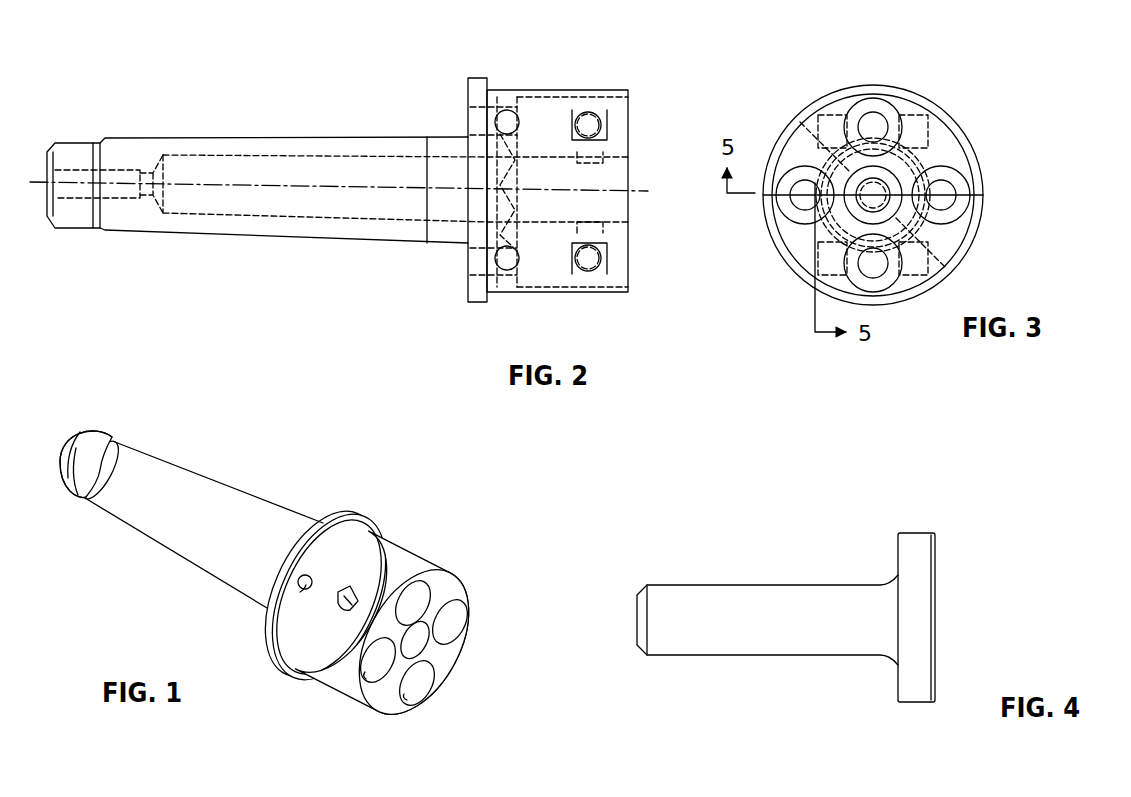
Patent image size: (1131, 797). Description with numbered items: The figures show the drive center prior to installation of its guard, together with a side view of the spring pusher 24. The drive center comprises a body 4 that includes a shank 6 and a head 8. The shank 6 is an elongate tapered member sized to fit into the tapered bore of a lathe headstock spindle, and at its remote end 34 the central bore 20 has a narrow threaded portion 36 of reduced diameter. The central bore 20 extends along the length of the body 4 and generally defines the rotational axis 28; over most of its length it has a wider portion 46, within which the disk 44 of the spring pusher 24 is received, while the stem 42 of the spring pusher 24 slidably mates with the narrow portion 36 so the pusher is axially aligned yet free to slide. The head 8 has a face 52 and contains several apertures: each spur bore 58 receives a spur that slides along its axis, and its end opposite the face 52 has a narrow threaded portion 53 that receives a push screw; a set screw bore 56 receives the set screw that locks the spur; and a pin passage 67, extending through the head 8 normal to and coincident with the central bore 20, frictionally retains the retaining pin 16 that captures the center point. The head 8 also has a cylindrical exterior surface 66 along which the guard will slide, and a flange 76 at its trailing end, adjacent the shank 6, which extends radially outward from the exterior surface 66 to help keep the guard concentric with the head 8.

In FIG. 2, the body 4 is at (393, 255).
In FIG. 1, the body 4 is at (186, 588).
In FIG. 2, the shank 6 is at (243, 137).
In FIG. 1, the shank 6 is at (198, 478).
In FIG. 2, the head 8 is at (545, 90).
In FIG. 1, the head 8 is at (388, 562).
In FIG. 1, the retaining pin 16 is at (303, 575).
In FIG. 2, the central bore 20 is at (253, 216).
In FIG. 1, the central bore 20 is at (420, 640).
In FIG. 4, the spring pusher 24 is at (785, 680).
In FIG. 2, the rotational axis 28 is at (645, 193).
In FIG. 2, the remote end 34 is at (55, 133).
In FIG. 1, the remote end 34 is at (87, 417).
In FIG. 2, the narrow portion 36 is at (85, 175).
In FIG. 4, the stem 42 is at (725, 593).
In FIG. 4, the disk 44 is at (917, 545).
In FIG. 2, the wider portion 46 is at (313, 170).
In FIG. 2, the face 52 is at (628, 125).
In FIG. 1, the face 52 is at (442, 587).
In FIG. 2, the narrow threaded portion 53 is at (478, 118).
In FIG. 3, the narrow threaded portion 53 is at (880, 110).
In FIG. 3, the set screw bore 56 is at (946, 130).
In FIG. 1, the set screw bore 56 is at (347, 618).
In FIG. 3, the spur bore 58 is at (940, 178).
In FIG. 1, the spur bore 58 is at (453, 622).
In FIG. 2, the exterior surface 66 is at (557, 292).
In FIG. 3, the exterior surface 66 is at (945, 260).
In FIG. 1, the exterior surface 66 is at (355, 547).
In FIG. 3, the pin passage 67 is at (825, 160).
In FIG. 1, the pin passage 67 is at (303, 587).
In FIG. 2, the flange 76 is at (478, 300).
In FIG. 1, the flange 76 is at (325, 520).